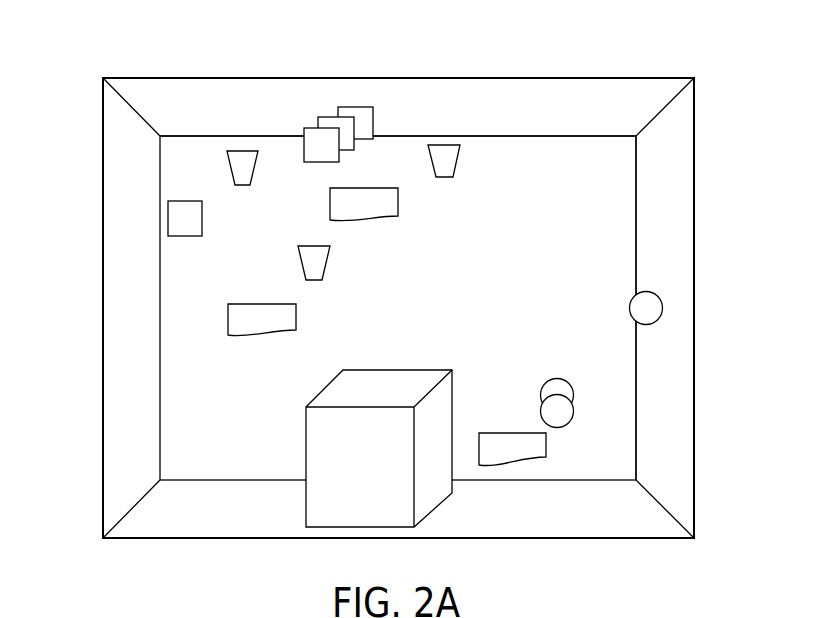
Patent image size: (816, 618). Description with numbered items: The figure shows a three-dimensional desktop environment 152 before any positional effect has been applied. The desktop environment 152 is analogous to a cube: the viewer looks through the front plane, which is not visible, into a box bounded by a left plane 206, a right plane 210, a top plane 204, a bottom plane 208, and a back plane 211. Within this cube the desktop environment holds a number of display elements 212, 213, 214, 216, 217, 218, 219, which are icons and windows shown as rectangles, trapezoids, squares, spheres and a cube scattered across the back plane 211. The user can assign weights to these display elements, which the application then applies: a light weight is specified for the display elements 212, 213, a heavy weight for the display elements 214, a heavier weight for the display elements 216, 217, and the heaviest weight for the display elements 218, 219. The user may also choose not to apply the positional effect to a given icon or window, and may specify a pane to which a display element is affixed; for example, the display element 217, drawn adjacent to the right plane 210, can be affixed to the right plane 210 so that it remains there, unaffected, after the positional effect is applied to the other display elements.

The desktop environment 152 is at (577, 77).
The top plane 204 is at (216, 97).
The left plane 206 is at (135, 282).
The bottom plane 208 is at (200, 518).
The right plane 210 is at (665, 229).
The back plane 211 is at (608, 457).
The display element 212 is at (367, 205).
The display element 213 is at (500, 440).
The display element 214 is at (240, 168).
The display element 216 is at (585, 442).
The display element 217 is at (640, 306).
The display element 218 is at (387, 102).
The display element 219 is at (379, 478).